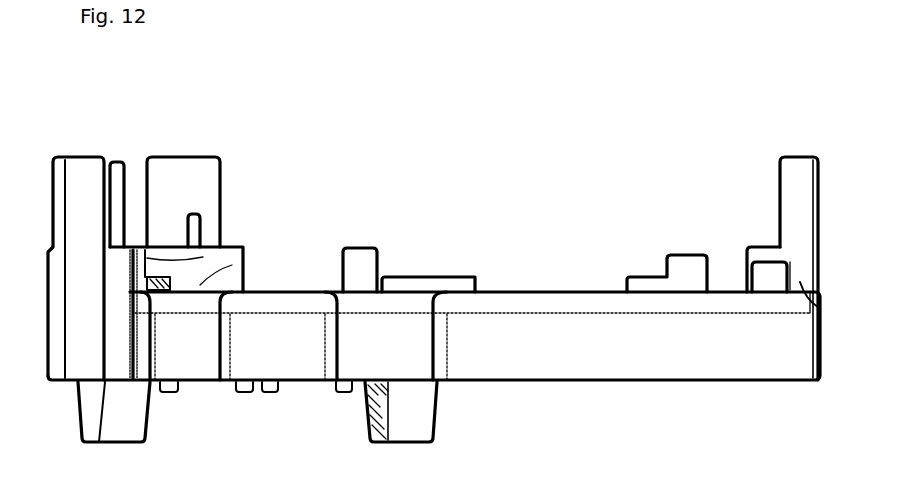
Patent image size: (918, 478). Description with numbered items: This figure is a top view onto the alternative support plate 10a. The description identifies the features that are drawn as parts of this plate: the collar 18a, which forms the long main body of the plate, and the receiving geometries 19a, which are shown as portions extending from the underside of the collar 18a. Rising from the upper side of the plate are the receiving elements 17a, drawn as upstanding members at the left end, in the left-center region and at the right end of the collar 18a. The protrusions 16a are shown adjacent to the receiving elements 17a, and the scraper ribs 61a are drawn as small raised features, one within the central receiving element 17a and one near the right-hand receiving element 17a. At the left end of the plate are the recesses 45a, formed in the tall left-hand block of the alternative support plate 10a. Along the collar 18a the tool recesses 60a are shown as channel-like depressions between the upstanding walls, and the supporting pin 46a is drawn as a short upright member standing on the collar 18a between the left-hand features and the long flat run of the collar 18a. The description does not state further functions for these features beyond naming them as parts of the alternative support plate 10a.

The alternative support plate 10a is at (663, 92).
The recesses 45a is at (82, 235).
The receiving elements 17a is at (112, 160).
The scraper ribs 61a is at (198, 228).
The protrusions 16a is at (232, 265).
The tool recesses 60a is at (187, 335).
The supporting pin 46a is at (357, 265).
The collar 18a is at (638, 352).
The receiving geometries 19a is at (378, 427).